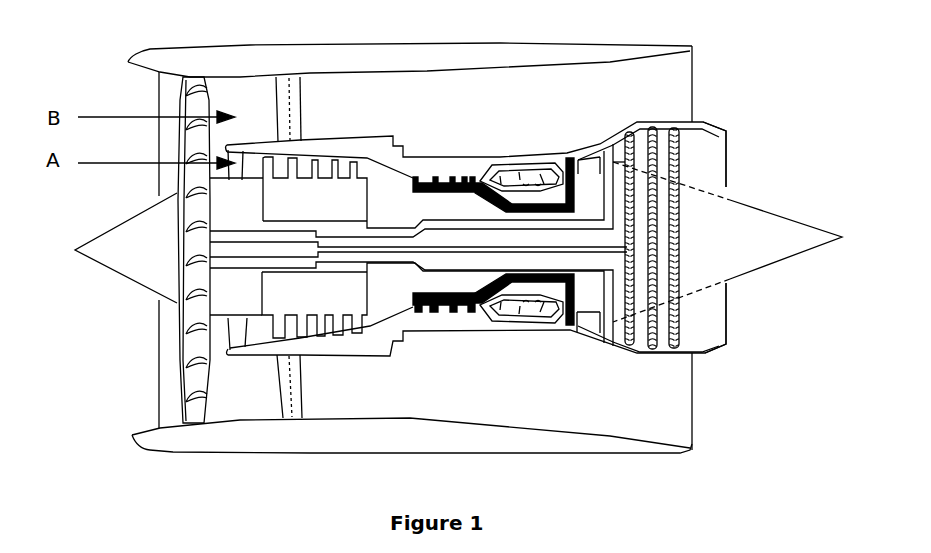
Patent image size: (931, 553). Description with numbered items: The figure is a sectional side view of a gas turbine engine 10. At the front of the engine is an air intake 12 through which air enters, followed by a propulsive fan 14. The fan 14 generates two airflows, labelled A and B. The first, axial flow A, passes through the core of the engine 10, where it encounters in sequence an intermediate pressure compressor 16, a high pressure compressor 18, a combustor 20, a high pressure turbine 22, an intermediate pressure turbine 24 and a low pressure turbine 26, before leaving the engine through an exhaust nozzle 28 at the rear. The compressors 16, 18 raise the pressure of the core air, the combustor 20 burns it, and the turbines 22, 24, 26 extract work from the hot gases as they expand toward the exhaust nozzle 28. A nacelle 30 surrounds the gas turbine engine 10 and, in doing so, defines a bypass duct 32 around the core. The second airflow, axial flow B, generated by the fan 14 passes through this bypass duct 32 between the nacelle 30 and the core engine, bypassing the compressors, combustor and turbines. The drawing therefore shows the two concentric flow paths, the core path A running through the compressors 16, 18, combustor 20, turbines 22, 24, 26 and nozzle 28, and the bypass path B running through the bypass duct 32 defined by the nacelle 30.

The gas turbine engine 10 is at (113, 53).
The air intake 12 is at (168, 98).
The propulsive fan 14 is at (182, 75).
The intermediate pressure compressor 16 is at (303, 200).
The high pressure compressor 18 is at (435, 178).
The combustor 20 is at (529, 173).
The high pressure turbine 22 is at (570, 152).
The intermediate pressure turbine 24 is at (613, 163).
The low pressure turbine 26 is at (677, 143).
The exhaust nozzle 28 is at (707, 172).
The nacelle 30 is at (274, 72).
The bypass duct 32 is at (468, 107).